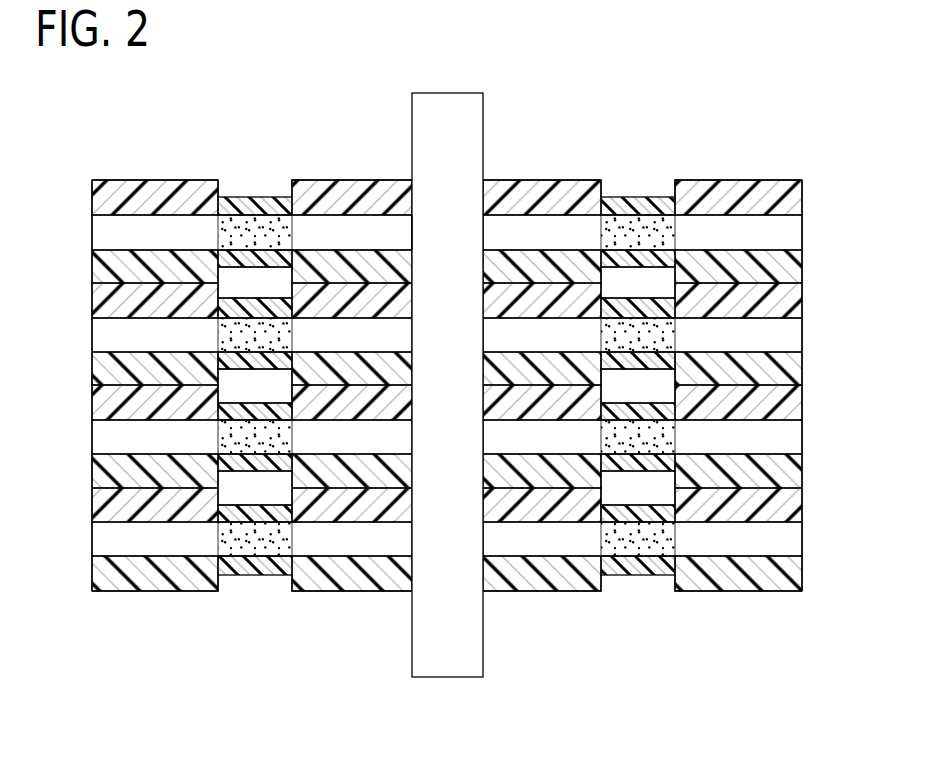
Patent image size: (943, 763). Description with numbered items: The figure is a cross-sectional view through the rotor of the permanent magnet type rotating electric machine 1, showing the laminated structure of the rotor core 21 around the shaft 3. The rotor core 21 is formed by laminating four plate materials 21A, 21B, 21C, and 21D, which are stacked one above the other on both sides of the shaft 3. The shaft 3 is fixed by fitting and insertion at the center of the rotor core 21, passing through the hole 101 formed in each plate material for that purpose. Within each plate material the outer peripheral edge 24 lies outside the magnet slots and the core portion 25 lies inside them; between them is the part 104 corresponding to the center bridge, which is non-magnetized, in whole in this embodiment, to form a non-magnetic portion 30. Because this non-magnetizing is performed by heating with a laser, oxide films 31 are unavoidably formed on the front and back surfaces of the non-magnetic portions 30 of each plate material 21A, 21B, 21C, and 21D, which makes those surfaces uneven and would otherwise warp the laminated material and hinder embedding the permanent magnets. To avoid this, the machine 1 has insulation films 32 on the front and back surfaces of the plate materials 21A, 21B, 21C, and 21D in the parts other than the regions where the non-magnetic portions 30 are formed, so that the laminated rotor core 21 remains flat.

The permanent magnet type rotating electric machine 1 is at (803, 108).
The shaft 3 is at (447, 103).
The rotor core 21 is at (883, 211).
The plate material 21A is at (797, 232).
The plate material 21B is at (797, 334).
The plate material 21C is at (797, 435).
The plate material 21D is at (797, 537).
The outer peripheral edge 24 is at (792, 220).
The core portion 25 is at (535, 225).
The non-magnetic portion 30 is at (267, 228).
The oxide film 31 is at (243, 207).
The insulation film 32 is at (93, 189).
The hole 101 is at (419, 232).
The part corresponding to center bridge 104 is at (218, 228).